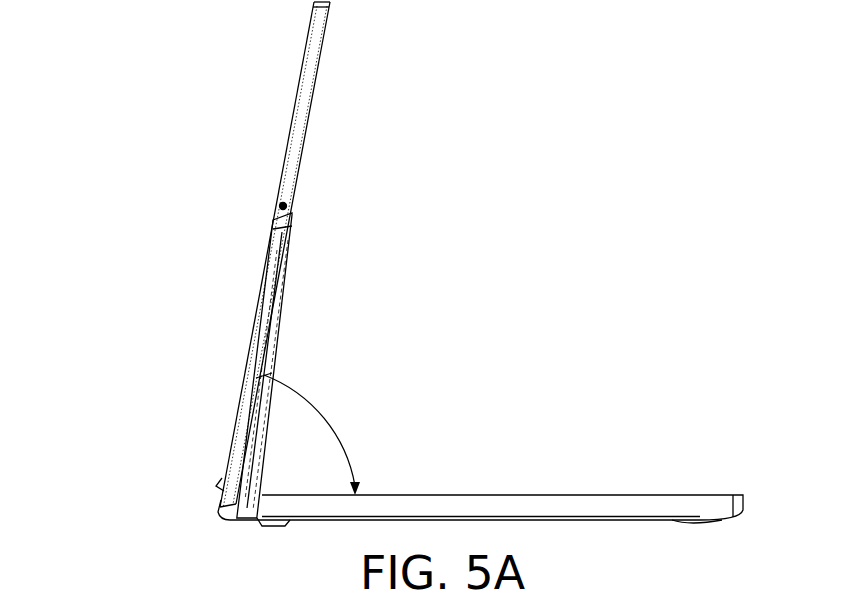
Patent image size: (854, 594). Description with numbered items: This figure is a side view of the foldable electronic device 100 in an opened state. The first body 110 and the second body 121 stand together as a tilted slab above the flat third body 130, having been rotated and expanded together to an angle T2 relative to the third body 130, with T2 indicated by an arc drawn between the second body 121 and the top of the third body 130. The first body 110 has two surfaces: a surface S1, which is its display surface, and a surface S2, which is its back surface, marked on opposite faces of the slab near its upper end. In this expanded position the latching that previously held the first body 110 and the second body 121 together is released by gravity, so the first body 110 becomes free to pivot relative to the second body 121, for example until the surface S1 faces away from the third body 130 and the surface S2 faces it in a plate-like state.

The foldable electronic device 100 is at (97, 480).
The first body 110 is at (292, 114).
The second body 121 is at (259, 331).
The third body 130 is at (487, 495).
The surface S1 is at (324, 53).
The surface S2 is at (306, 27).
The angle T2 is at (314, 434).